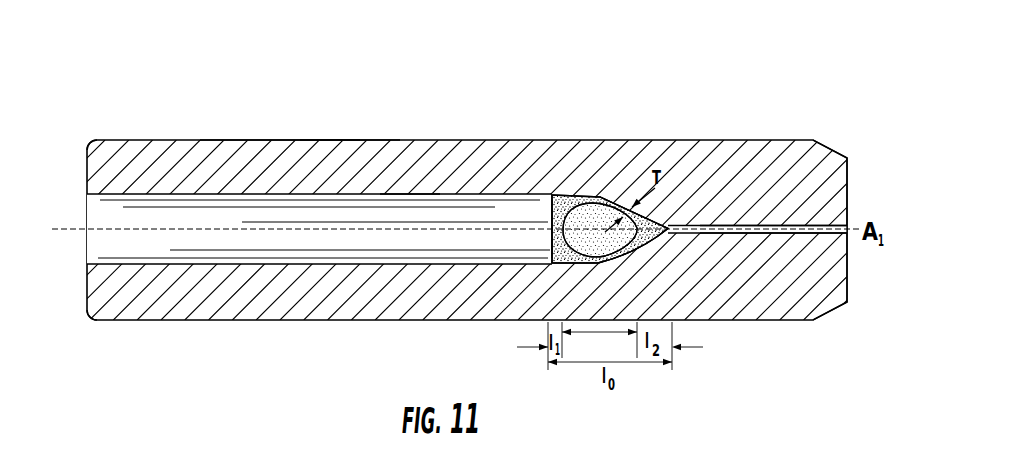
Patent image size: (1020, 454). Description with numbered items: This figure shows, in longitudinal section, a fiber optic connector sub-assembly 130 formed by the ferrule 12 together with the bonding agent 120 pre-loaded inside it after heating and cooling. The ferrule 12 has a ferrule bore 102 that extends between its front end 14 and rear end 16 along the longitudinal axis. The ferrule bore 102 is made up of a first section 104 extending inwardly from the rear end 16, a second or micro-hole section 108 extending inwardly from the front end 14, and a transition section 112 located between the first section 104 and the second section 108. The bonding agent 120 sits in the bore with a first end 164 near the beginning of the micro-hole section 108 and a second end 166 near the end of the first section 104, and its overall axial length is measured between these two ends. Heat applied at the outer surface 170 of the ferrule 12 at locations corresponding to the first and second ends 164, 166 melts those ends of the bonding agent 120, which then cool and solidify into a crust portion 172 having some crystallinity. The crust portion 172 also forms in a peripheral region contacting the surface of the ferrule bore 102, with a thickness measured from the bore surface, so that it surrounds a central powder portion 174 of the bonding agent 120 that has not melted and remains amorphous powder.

The ferrule 12 is at (122, 138).
The front end 14 is at (848, 167).
The rear end 16 is at (86, 173).
The ferrule bore 102 is at (108, 245).
The first section 104 is at (407, 194).
The second section 108 is at (757, 212).
The transition section 112 is at (603, 193).
The bonding agent 120 is at (551, 240).
The fiber optic connector sub-assembly 130 is at (278, 91).
The first end 164 is at (672, 226).
The second end 166 is at (552, 213).
The outer surface 170 is at (327, 140).
The crust portion 172 is at (566, 202).
The powder portion 174 is at (608, 250).